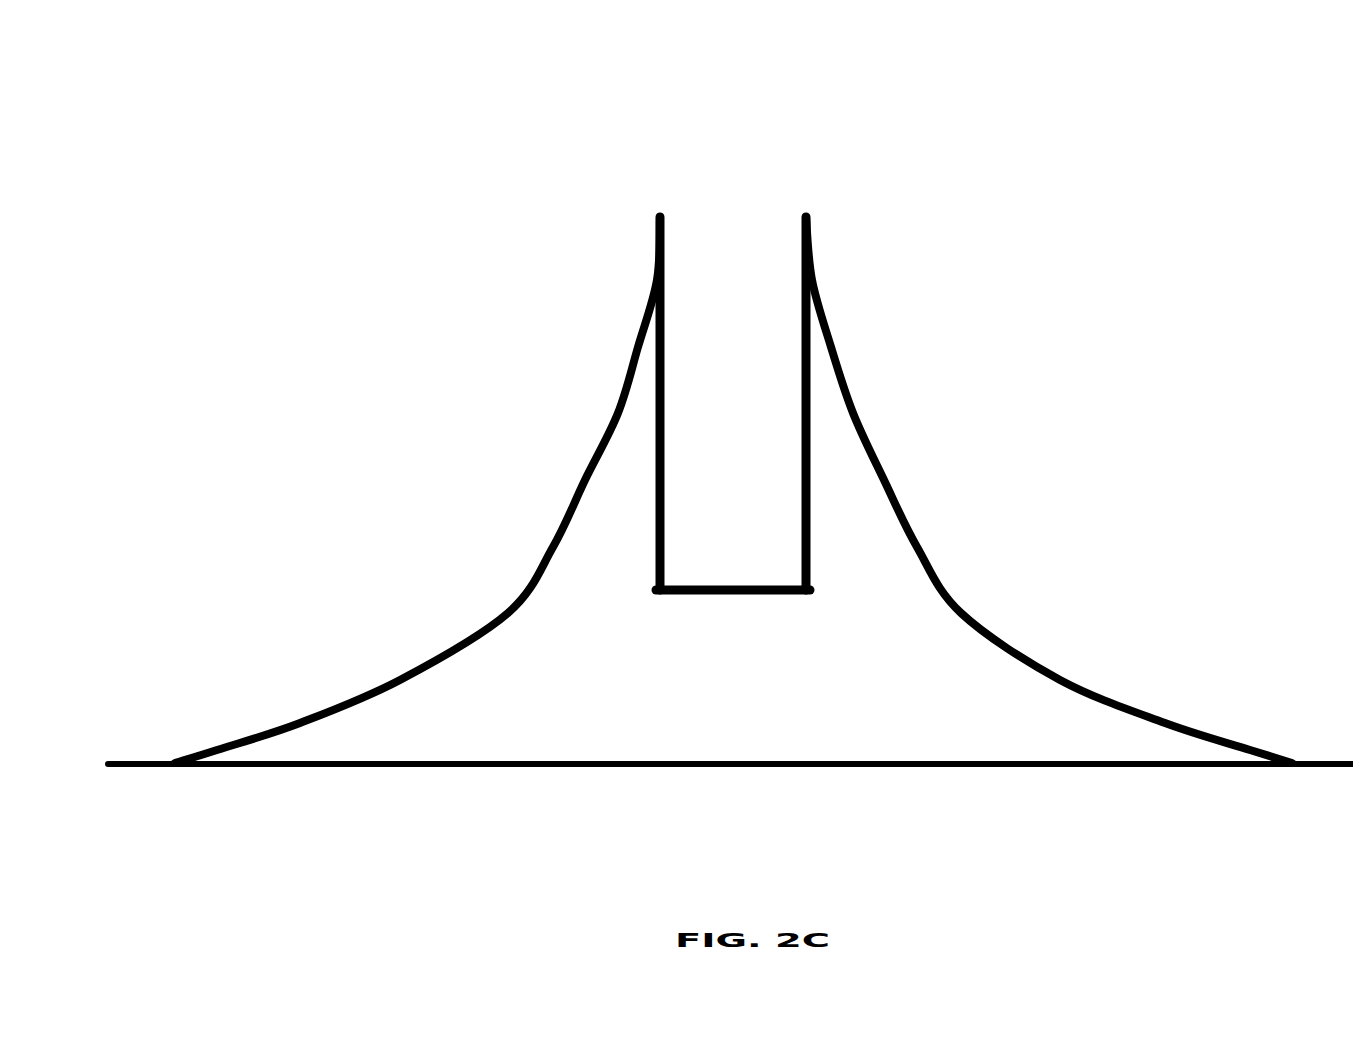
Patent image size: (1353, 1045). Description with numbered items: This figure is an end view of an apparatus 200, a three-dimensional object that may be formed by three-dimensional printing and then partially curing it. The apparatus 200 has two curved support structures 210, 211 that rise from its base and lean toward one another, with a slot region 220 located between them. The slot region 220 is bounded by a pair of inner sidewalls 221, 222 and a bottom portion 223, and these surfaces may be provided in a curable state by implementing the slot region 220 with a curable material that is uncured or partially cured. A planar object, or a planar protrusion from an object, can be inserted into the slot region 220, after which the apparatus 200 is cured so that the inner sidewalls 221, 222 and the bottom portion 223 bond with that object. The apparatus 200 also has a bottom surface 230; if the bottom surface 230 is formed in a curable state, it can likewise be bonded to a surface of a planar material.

The apparatus 200 is at (1256, 54).
The curved support structure 210 is at (367, 693).
The curved support structure 211 is at (1036, 657).
The slot region 220 is at (742, 361).
The sidewall 221 is at (664, 245).
The sidewall 222 is at (806, 247).
The bottom portion 223 is at (708, 587).
The bottom surface 230 is at (845, 767).